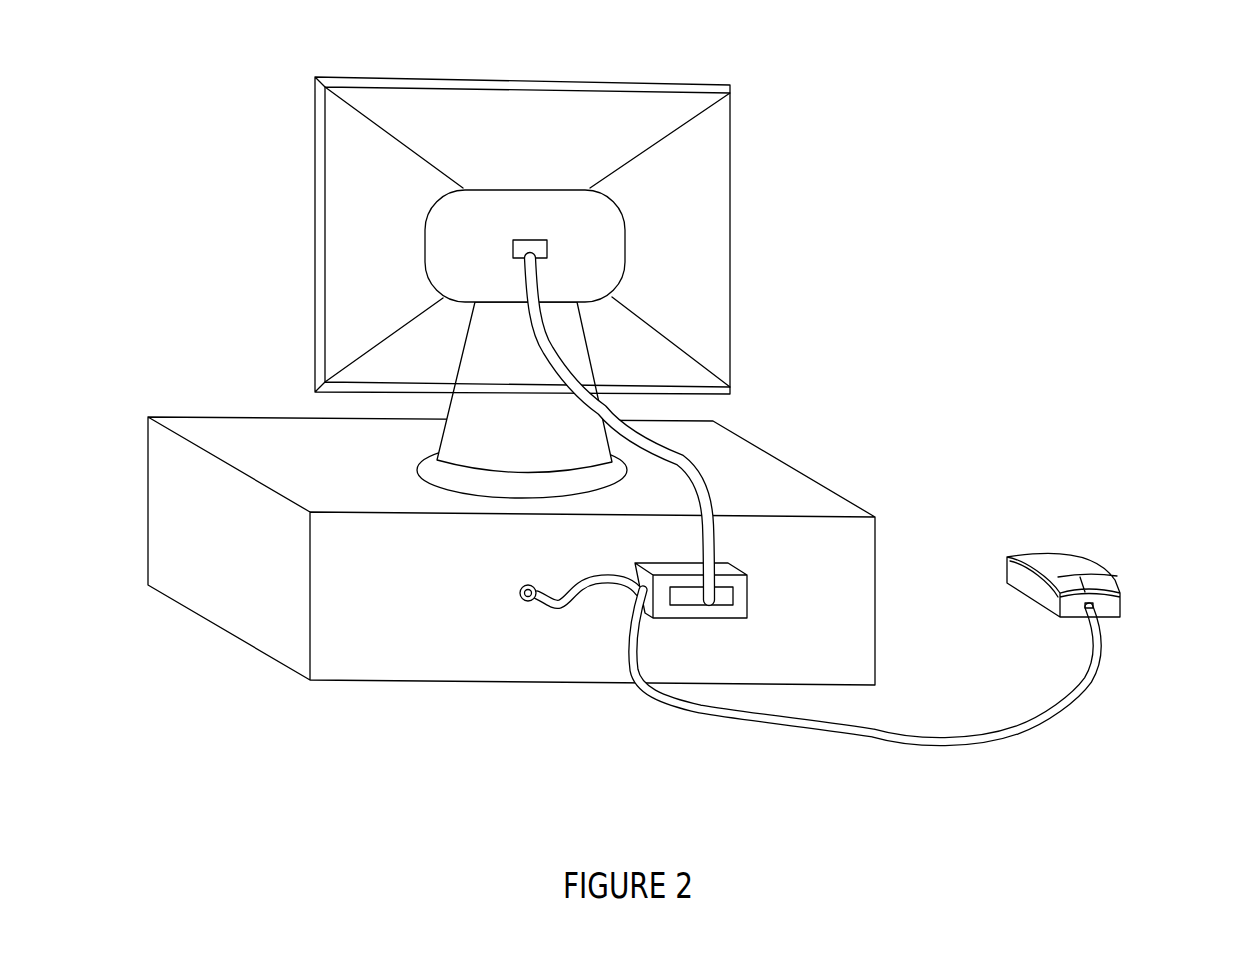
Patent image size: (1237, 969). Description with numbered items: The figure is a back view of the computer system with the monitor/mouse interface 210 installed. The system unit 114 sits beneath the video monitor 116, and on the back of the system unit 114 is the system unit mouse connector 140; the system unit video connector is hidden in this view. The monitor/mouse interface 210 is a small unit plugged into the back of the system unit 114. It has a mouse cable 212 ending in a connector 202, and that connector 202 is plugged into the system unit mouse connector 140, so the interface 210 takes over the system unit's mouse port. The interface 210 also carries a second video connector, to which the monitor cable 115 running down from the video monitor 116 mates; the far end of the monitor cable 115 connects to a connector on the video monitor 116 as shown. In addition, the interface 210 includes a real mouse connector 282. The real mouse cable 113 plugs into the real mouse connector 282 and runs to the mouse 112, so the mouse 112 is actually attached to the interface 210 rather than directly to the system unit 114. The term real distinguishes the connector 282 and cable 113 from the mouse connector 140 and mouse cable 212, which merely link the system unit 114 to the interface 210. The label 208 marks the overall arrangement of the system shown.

The computer system 208 is at (1031, 47).
The video monitor 116 is at (310, 238).
The system unit 114 is at (170, 503).
The monitor cable 115 is at (710, 498).
The monitor/mouse interface 210 is at (750, 603).
The connector 202 is at (527, 586).
The system unit mouse connector 140 is at (522, 597).
The real mouse connector 282 is at (630, 595).
The mouse cable 212 is at (557, 602).
The mouse 112 is at (1090, 553).
The real mouse cable 113 is at (1097, 672).